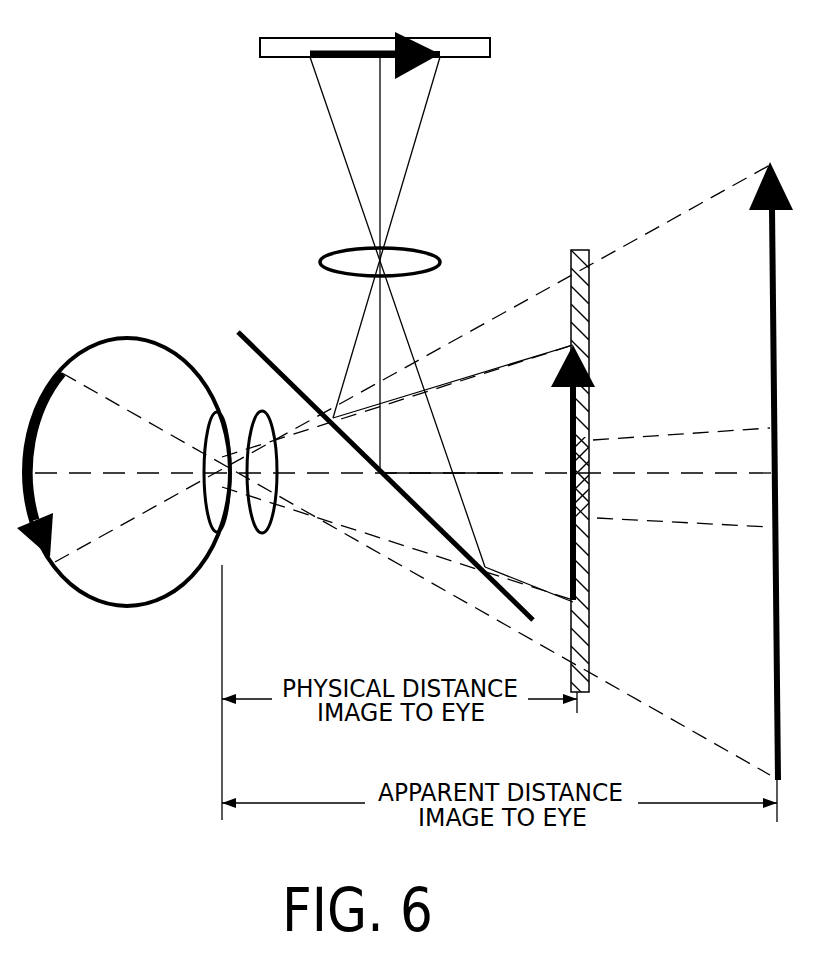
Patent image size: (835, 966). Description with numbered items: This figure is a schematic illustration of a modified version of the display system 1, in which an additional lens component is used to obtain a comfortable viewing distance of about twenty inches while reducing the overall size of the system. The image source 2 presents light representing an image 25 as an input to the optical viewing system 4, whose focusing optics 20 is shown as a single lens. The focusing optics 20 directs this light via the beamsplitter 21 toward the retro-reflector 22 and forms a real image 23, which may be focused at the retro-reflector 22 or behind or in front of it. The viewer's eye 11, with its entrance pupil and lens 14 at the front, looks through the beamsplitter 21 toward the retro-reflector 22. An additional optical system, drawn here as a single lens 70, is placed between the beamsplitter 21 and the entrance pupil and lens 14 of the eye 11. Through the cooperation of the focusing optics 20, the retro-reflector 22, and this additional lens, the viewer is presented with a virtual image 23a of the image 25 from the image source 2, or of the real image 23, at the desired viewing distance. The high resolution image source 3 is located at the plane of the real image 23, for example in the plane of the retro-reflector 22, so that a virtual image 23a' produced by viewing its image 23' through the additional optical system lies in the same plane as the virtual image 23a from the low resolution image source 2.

The display system 1 is at (246, 153).
The image source 2 is at (260, 38).
The high resolution image source 3 is at (604, 503).
The optical viewing system 4 is at (311, 206).
The eye 11 is at (125, 616).
The entrance pupil and lens 14 is at (212, 528).
The focusing optics 20 is at (468, 252).
The beamsplitter 21 is at (450, 537).
The retro-reflector 22 is at (590, 352).
The real image 23 is at (408, 472).
The image 23' is at (397, 544).
The virtual image 23a is at (414, 471).
The virtual image 23a' is at (681, 456).
The image 25 is at (352, 60).
The eyepiece lens 70 is at (263, 534).